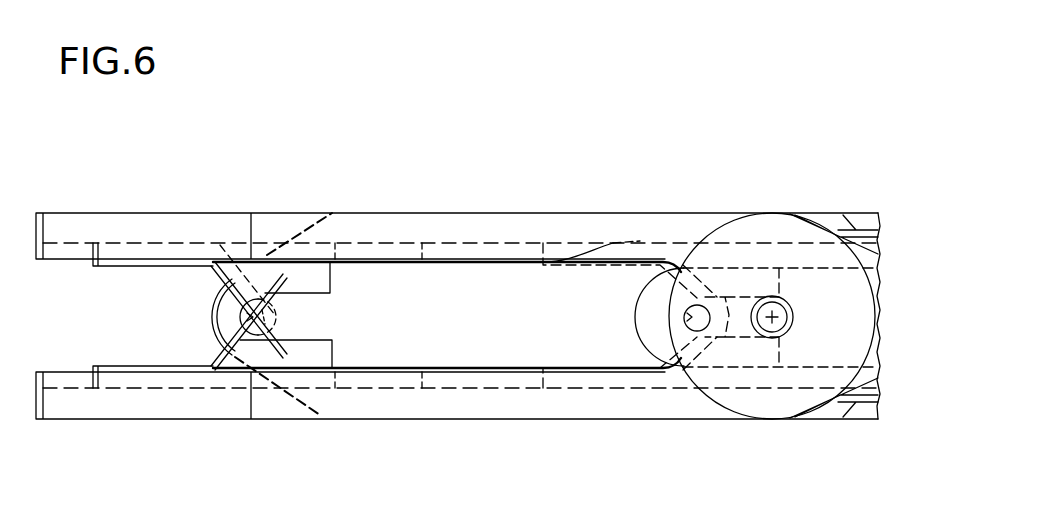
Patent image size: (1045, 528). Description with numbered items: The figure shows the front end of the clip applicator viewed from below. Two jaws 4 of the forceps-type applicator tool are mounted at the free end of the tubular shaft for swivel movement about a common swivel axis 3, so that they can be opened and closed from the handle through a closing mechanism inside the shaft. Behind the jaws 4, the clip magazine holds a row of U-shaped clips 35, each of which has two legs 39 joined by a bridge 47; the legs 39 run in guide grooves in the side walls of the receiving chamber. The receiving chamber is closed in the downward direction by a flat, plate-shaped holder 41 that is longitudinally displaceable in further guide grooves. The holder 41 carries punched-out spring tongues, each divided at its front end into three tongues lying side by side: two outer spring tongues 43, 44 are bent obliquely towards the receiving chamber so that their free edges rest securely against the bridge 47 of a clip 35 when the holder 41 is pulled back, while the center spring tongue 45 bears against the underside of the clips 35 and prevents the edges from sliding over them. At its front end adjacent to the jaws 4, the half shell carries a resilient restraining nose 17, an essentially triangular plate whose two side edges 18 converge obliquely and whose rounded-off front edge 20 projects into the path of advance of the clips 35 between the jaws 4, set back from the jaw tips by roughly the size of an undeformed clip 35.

The swivel axis 3 is at (761, 298).
The jaws 4 is at (72, 228).
The restraining nose 17 is at (205, 350).
The side edges 18 is at (268, 255).
The front edge 20 is at (213, 318).
The clips 35 is at (200, 278).
The legs 39 is at (138, 266).
The holder 41 is at (512, 252).
The outer spring tongue 43 is at (276, 283).
The outer spring tongue 44 is at (300, 350).
The center spring tongue 45 is at (303, 318).
The bridge 47 is at (262, 342).